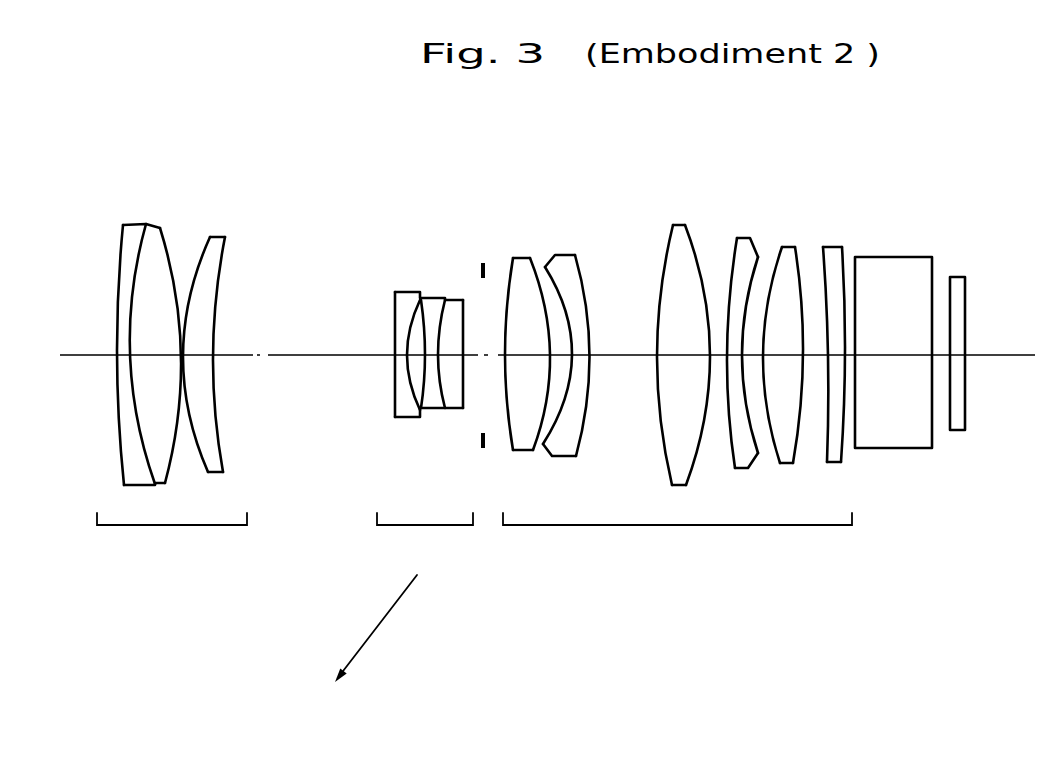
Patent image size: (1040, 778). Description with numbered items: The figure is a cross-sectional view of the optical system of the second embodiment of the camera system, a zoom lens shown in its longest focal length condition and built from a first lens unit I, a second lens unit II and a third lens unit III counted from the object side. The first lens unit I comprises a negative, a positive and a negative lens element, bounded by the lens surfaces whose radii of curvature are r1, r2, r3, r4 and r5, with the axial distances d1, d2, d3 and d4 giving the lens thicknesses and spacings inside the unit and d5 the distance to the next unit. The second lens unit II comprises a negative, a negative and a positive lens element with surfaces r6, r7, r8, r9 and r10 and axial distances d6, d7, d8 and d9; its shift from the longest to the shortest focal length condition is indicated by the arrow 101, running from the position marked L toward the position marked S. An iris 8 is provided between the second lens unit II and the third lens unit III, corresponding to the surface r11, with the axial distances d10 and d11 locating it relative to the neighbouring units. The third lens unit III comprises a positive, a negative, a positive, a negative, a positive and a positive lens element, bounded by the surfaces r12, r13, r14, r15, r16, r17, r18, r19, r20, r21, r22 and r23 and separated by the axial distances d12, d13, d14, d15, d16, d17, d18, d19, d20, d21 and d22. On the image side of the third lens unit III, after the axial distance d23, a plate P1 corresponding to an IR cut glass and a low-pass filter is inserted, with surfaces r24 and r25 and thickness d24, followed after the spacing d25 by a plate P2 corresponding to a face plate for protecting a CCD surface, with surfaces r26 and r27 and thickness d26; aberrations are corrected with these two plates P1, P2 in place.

The radius of curvature of first lens surface r1 is at (122, 243).
The radius of curvature of second lens surface r2 is at (150, 242).
The radius of curvature of third lens surface r3 is at (175, 237).
The radius of curvature of fourth lens surface r4 is at (207, 238).
The radius of curvature of fifth lens surface r5 is at (223, 247).
The radius of curvature of sixth lens surface r6 is at (395, 310).
The radius of curvature of seventh lens surface r7 is at (406, 293).
The radius of curvature of eighth lens surface r8 is at (420, 297).
The radius of curvature of ninth lens surface r9 is at (440, 298).
The radius of curvature of tenth lens surface r10 is at (466, 307).
The radius of curvature of eleventh surface r11 is at (483, 272).
The radius of curvature of twelfth lens surface r12 is at (507, 258).
The radius of curvature of thirteenth lens surface r13 is at (531, 259).
The radius of curvature of fourteenth lens surface r14 is at (560, 256).
The radius of curvature of fifteenth lens surface r15 is at (582, 267).
The radius of curvature of sixteenth lens surface r16 is at (665, 232).
The radius of curvature of seventeenth lens surface r17 is at (693, 211).
The radius of curvature of eighteenth lens surface r18 is at (728, 240).
The radius of curvature of nineteenth lens surface r19 is at (748, 243).
The radius of curvature of twentieth lens surface r20 is at (783, 243).
The radius of curvature of twenty-first lens surface r21 is at (803, 240).
The radius of curvature of twenty-second lens surface r22 is at (826, 246).
The radius of curvature of twenty-third lens surface r23 is at (841, 247).
The radius of curvature of twenty-fourth surface r24 is at (855, 257).
The radius of curvature of twenty-fifth surface r25 is at (937, 272).
The radius of curvature of twenty-sixth surface r26 is at (948, 283).
The radius of curvature of twenty-seventh surface r27 is at (967, 287).
The axial distance of first lens surface d1 is at (123, 352).
The axial distance of second lens surface d2 is at (151, 344).
The axial distance of third lens surface d3 is at (183, 292).
The axial distance of fourth lens surface d4 is at (200, 353).
The axial distance of fifth lens surface d5 is at (287, 342).
The axial distance of sixth lens surface d6 is at (400, 352).
The axial distance of seventh lens surface d7 is at (410, 358).
The axial distance of eighth lens surface d8 is at (441, 408).
The axial distance of ninth lens surface d9 is at (452, 346).
The axial distance of tenth lens surface d10 is at (480, 367).
The axial distance of eleventh surface d11 is at (493, 365).
The axial distance of twelfth lens surface d12 is at (531, 345).
The axial distance of thirteenth lens surface d13 is at (562, 358).
The axial distance of fourteenth lens surface d14 is at (580, 348).
The axial distance of fifteenth lens surface d15 is at (621, 344).
The axial distance of sixteenth lens surface d16 is at (684, 344).
The axial distance of seventeenth lens surface d17 is at (710, 418).
The axial distance of eighteenth lens surface d18 is at (728, 362).
The axial distance of nineteenth lens surface d19 is at (750, 348).
The axial distance of twentieth lens surface d20 is at (788, 347).
The axial distance of twenty-first lens surface d21 is at (806, 435).
The axial distance of twenty-second lens surface d22 is at (832, 365).
The axial distance of twenty-third lens surface d23 is at (842, 358).
The axial distance of twenty-fourth surface d24 is at (894, 341).
The axial distance of twenty-fifth surface d25 is at (945, 363).
The axial distance of twenty-sixth surface d26 is at (967, 347).
The iris 8 is at (483, 455).
The direction of lens movement 101 is at (380, 628).
The plate P1 is at (900, 452).
The plate P2 is at (967, 408).
The first lens unit I is at (172, 540).
The second lens unit II is at (425, 540).
The third lens unit III is at (677, 539).
The long focal length side L is at (290, 569).
The short focal length side S is at (291, 679).